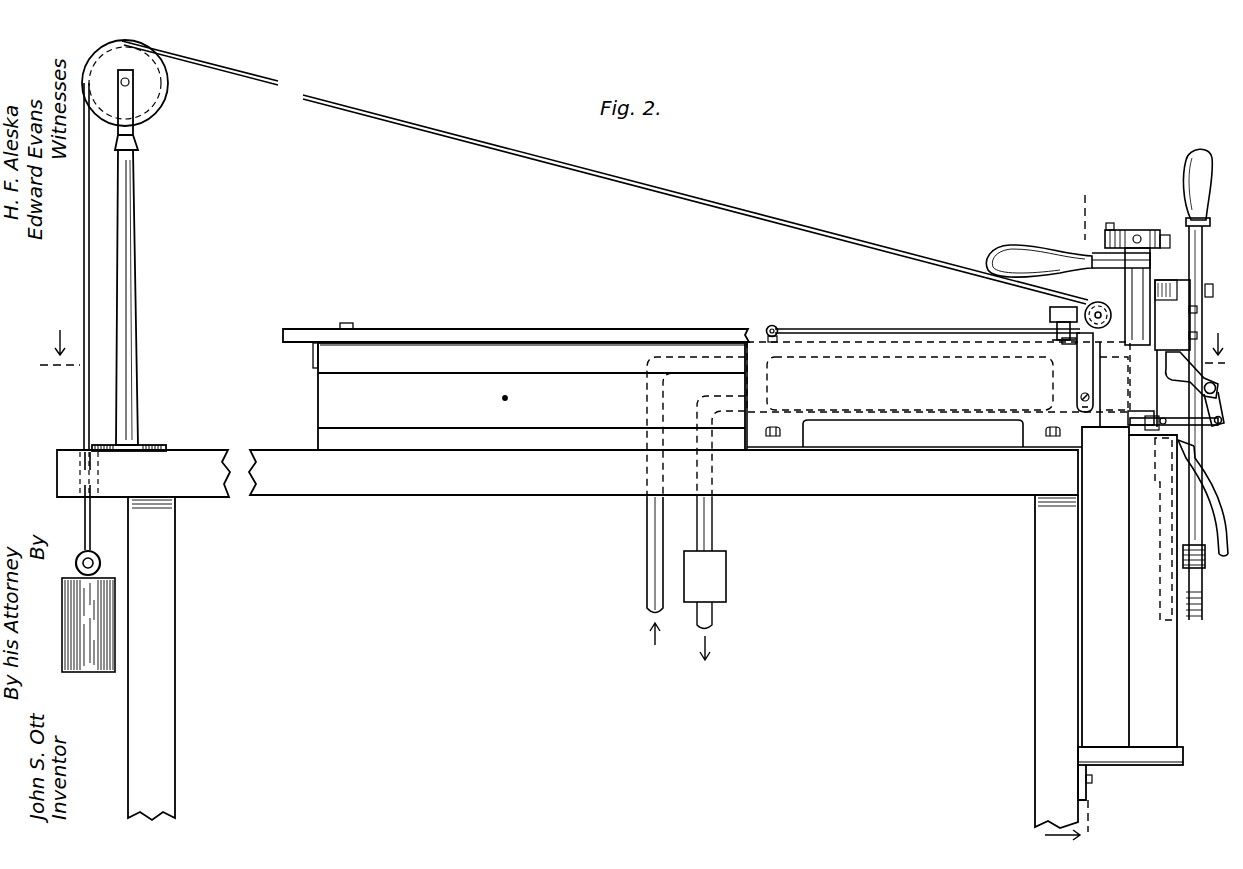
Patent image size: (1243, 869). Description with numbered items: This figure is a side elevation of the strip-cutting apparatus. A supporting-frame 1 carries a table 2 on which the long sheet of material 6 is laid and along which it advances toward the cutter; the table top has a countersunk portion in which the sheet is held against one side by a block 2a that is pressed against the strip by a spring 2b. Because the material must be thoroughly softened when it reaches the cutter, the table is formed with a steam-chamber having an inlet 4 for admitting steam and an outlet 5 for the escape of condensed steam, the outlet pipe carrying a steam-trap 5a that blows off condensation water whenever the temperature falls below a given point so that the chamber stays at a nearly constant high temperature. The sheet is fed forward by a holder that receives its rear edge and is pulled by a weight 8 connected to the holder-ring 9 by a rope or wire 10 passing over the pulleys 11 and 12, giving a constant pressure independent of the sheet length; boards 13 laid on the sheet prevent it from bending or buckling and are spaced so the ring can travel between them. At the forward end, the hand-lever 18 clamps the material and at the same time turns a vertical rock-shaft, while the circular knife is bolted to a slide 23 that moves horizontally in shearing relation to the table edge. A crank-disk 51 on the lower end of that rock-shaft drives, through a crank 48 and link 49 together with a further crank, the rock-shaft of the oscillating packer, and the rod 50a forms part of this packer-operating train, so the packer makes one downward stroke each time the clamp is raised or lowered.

The supporting-frame 1 is at (567, 639).
The table 2 is at (952, 396).
The block 2a is at (1068, 345).
The spring 2b is at (1082, 360).
The inlet 4 is at (643, 556).
The outlet 5 is at (713, 530).
The steam-trap 5a is at (727, 576).
The sheet of material 6 is at (630, 354).
The weight 8 is at (70, 580).
The holder-ring 9 is at (776, 327).
The rope or wire 10 is at (502, 150).
The pulley 11 is at (160, 100).
The pulley 12 is at (1085, 300).
The boards 13 is at (588, 329).
The hand-lever 18 is at (1063, 227).
The slide 23 is at (1166, 280).
The crank 48 is at (1222, 418).
The link 49 is at (1185, 427).
The valve rod 50a is at (1130, 613).
The crank-disk 51 is at (1132, 424).